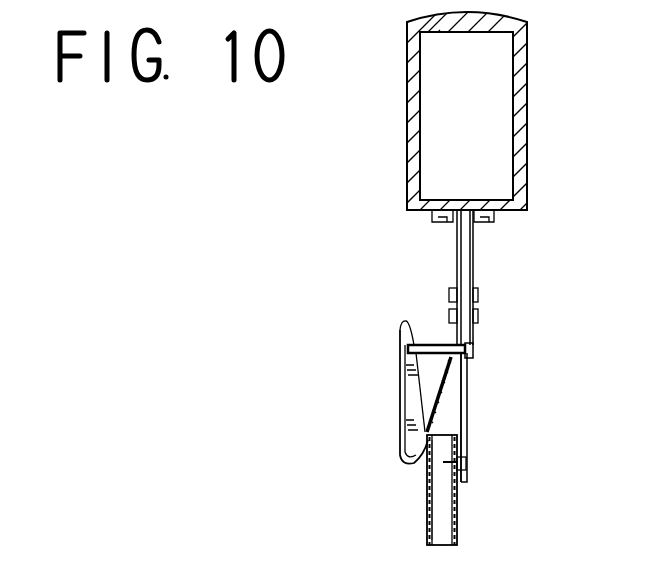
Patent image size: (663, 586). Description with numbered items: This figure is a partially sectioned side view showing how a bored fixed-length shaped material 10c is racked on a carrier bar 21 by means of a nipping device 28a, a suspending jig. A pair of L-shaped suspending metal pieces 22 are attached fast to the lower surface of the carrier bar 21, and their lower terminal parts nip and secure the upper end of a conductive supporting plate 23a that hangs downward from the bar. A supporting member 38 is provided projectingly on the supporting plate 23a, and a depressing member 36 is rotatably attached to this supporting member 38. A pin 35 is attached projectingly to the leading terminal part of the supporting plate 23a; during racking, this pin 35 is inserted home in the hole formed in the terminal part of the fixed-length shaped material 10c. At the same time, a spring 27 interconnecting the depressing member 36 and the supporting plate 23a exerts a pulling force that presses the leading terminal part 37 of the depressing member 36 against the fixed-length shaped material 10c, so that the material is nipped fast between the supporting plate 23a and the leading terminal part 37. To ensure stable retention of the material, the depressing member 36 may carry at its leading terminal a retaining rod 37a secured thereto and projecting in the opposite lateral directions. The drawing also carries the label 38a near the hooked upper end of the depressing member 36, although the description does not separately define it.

The carrier bar 21 is at (407, 122).
The L-shaped suspending metal pieces 22 is at (455, 240).
The supporting member 38 is at (427, 345).
The hook end 38a is at (408, 347).
The nipping device 28a is at (388, 378).
The depressing member 36 is at (400, 398).
The spring 27 is at (455, 379).
The supporting plate 23a is at (463, 433).
The leading terminal part 37 is at (430, 462).
The retaining rod 37a is at (430, 476).
The pin 35 is at (421, 480).
The fixed-length shaped material 10c is at (457, 513).